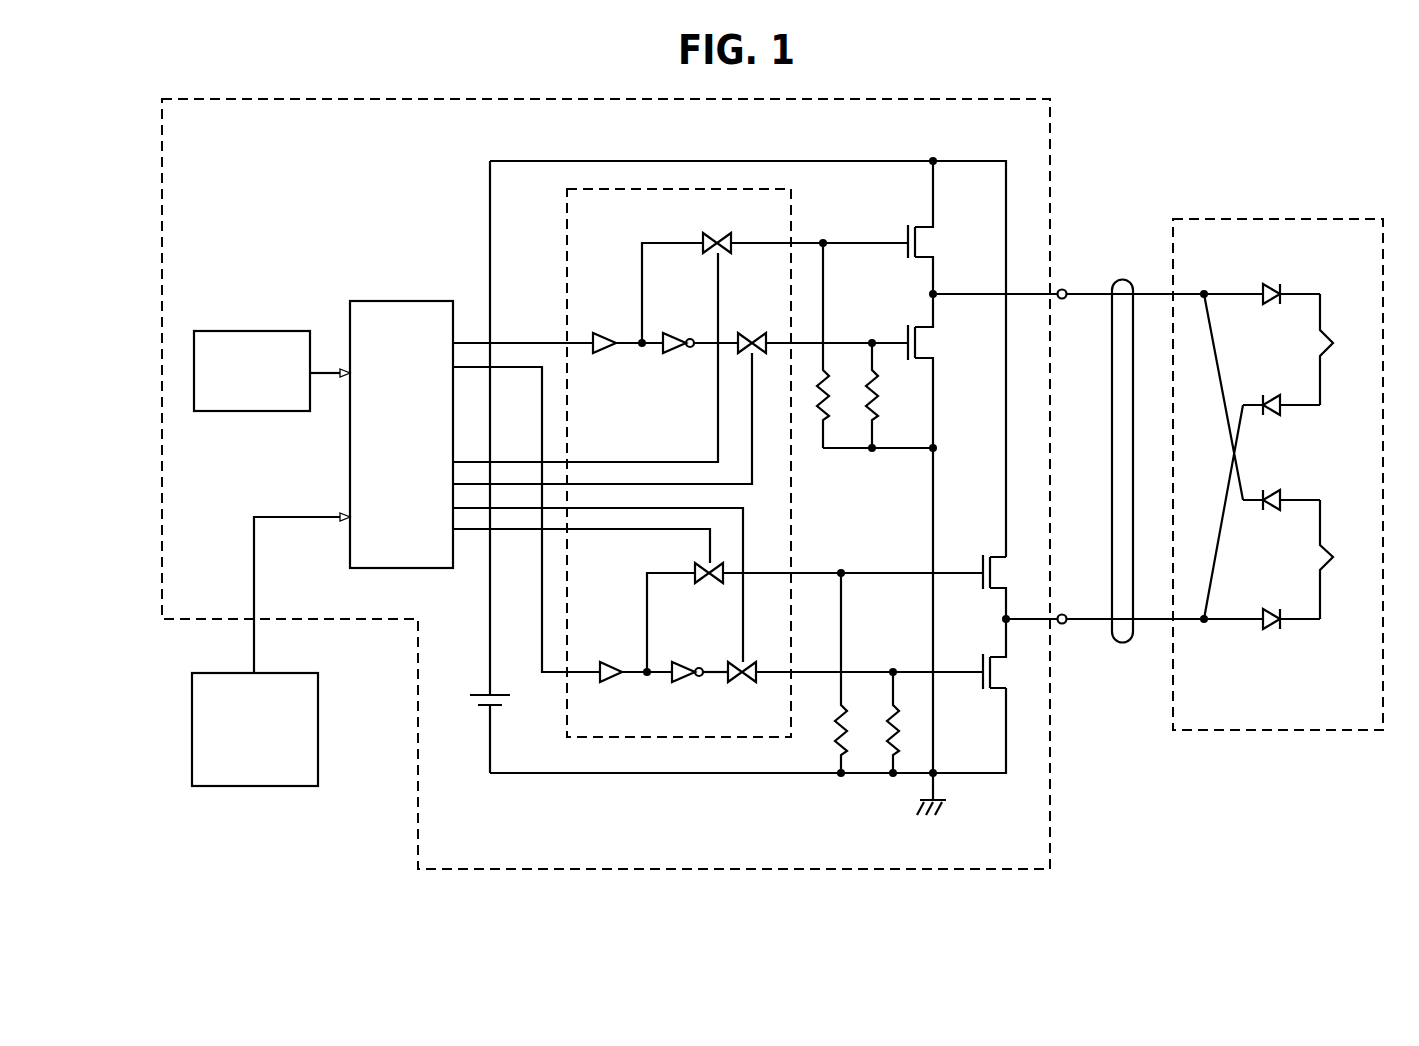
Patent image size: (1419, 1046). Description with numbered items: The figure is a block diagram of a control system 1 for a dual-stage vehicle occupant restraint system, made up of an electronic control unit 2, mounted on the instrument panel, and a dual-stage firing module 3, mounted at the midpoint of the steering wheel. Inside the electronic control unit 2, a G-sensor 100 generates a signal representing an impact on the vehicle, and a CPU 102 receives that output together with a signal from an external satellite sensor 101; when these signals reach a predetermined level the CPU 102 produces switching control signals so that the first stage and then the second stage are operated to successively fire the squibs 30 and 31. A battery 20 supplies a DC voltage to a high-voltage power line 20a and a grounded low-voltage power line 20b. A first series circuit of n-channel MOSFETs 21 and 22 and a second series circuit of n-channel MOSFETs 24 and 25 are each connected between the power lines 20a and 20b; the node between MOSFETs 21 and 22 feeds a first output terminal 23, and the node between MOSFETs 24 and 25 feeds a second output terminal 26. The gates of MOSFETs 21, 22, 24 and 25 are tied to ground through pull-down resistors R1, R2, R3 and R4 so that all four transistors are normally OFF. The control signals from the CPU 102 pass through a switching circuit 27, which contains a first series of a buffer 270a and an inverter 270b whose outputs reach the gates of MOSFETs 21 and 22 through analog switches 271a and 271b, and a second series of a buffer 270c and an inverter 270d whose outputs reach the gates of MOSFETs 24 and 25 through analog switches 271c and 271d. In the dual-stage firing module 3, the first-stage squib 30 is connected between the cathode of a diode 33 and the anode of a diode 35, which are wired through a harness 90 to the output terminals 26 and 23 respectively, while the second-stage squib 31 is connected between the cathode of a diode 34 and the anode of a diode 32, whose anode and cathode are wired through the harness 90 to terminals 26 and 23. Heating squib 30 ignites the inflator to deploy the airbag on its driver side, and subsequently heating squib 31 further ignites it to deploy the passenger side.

The control system 1 is at (1132, 173).
The electronic control unit 2 is at (1052, 130).
The dual-stage firing module 3 is at (1262, 219).
The battery 20 is at (492, 694).
The high-voltage power line 20a is at (690, 161).
The low-voltage power line 20b is at (631, 773).
The n-channel MOSFET 21 is at (907, 232).
The n-channel MOSFET 22 is at (907, 332).
The first output terminal 23 is at (1067, 291).
The n-channel MOSFET 24 is at (981, 563).
The n-channel MOSFET 25 is at (981, 660).
The second output terminal 26 is at (1067, 616).
The switching circuit 27 is at (652, 429).
The squib 30 is at (1334, 342).
The squib 31 is at (1334, 556).
The diode 32 is at (1270, 490).
The diode 33 is at (1270, 395).
The diode 34 is at (1268, 609).
The diode 35 is at (1268, 284).
The harness 90 is at (1118, 290).
The G-sensor 100 is at (248, 331).
The satellite sensor 101 is at (282, 673).
The CPU 102 is at (385, 301).
The buffer 270a is at (606, 332).
The inverter 270b is at (684, 332).
The buffer 270c is at (606, 661).
The inverter 270d is at (684, 683).
The analog switch 271a is at (717, 233).
The analog switch 271b is at (752, 332).
The analog switch 271c is at (709, 583).
The analog switch 271d is at (745, 683).
The pull-down resistor R1 is at (837, 345).
The pull-down resistor R2 is at (886, 395).
The pull-down resistor R3 is at (828, 673).
The pull-down resistor R4 is at (880, 722).